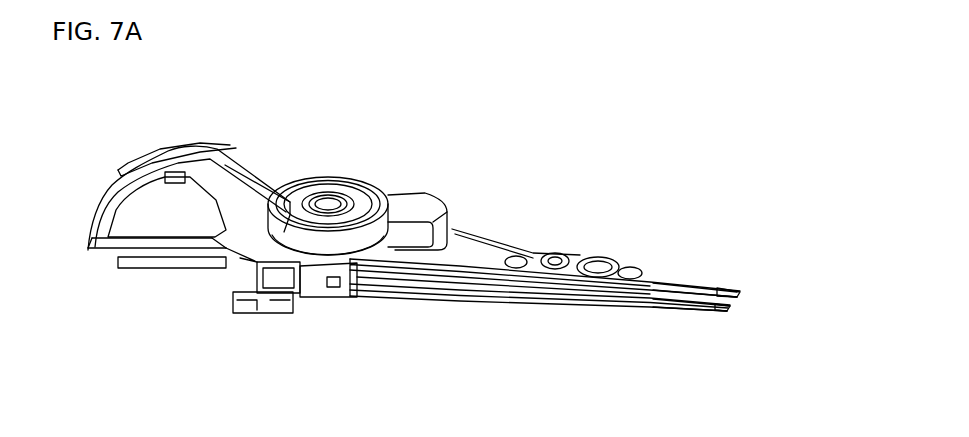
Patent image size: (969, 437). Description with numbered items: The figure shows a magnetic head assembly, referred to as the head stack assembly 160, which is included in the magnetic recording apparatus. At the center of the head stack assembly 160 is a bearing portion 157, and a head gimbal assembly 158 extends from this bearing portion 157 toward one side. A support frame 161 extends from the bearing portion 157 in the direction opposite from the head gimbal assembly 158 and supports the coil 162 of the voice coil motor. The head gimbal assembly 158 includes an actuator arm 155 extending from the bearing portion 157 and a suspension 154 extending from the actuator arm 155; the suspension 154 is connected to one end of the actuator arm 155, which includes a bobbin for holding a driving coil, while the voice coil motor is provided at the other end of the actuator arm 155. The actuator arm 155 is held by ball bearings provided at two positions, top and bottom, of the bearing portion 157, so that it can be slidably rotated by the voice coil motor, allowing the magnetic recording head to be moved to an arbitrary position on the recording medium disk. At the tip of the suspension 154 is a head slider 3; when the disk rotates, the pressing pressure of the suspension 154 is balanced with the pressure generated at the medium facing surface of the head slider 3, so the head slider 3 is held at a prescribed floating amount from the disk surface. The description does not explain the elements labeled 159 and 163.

The head slider 3 is at (717, 288).
The suspension 154 is at (685, 282).
The actuator arm 155 is at (570, 257).
The bearing portion 157 is at (342, 153).
The head gimbal assembly 158 is at (525, 226).
The arm 159 is at (463, 283).
The head stack assembly 160 is at (497, 171).
The support frame 161 is at (224, 154).
The coil 162 is at (163, 234).
The mounting bracket 163 is at (262, 290).